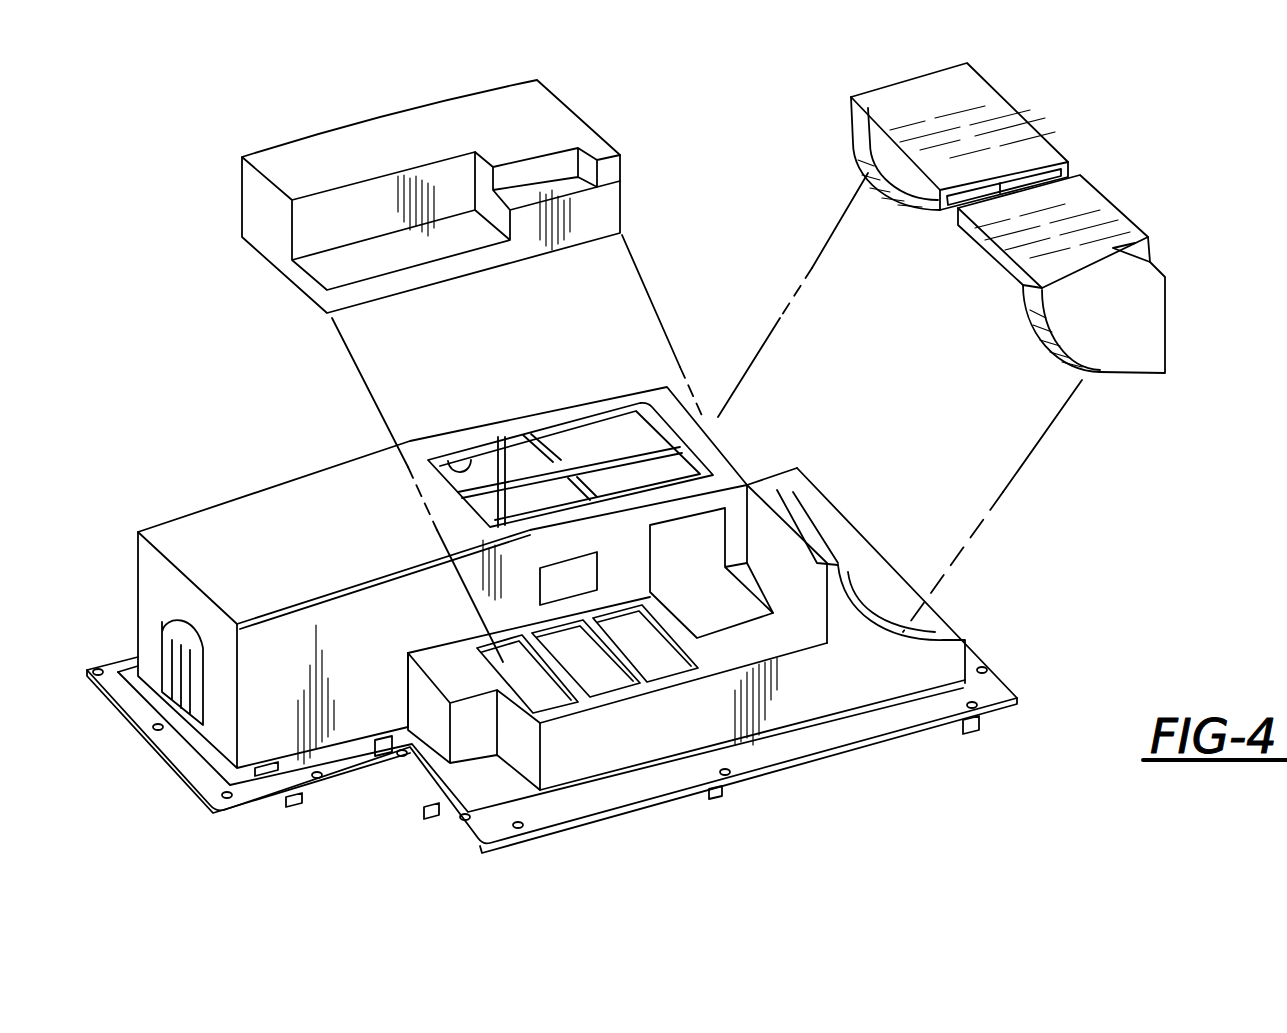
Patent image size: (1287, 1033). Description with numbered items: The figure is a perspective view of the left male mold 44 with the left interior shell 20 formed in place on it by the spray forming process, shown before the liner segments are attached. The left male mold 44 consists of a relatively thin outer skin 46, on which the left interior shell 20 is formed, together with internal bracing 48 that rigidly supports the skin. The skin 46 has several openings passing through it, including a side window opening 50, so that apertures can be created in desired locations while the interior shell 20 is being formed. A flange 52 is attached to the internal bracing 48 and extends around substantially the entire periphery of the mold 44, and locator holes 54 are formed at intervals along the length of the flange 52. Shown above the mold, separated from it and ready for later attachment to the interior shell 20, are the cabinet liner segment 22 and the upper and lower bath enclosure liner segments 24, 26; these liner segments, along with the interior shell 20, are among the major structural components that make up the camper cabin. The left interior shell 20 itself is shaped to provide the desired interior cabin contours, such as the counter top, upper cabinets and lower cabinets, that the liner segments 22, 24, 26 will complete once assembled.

The left interior shell 20 is at (316, 548).
The cabinet liner segment 22 is at (500, 115).
The upper bath enclosure liner segment 24 is at (985, 108).
The lower bath enclosure liner segment 26 is at (1108, 206).
The left male mold 44 is at (987, 651).
The outer skin 46 is at (468, 468).
The internal bracing 48 is at (572, 465).
The side window opening 50 is at (610, 425).
The flange 52 is at (1002, 695).
The locator holes 54 is at (223, 797).